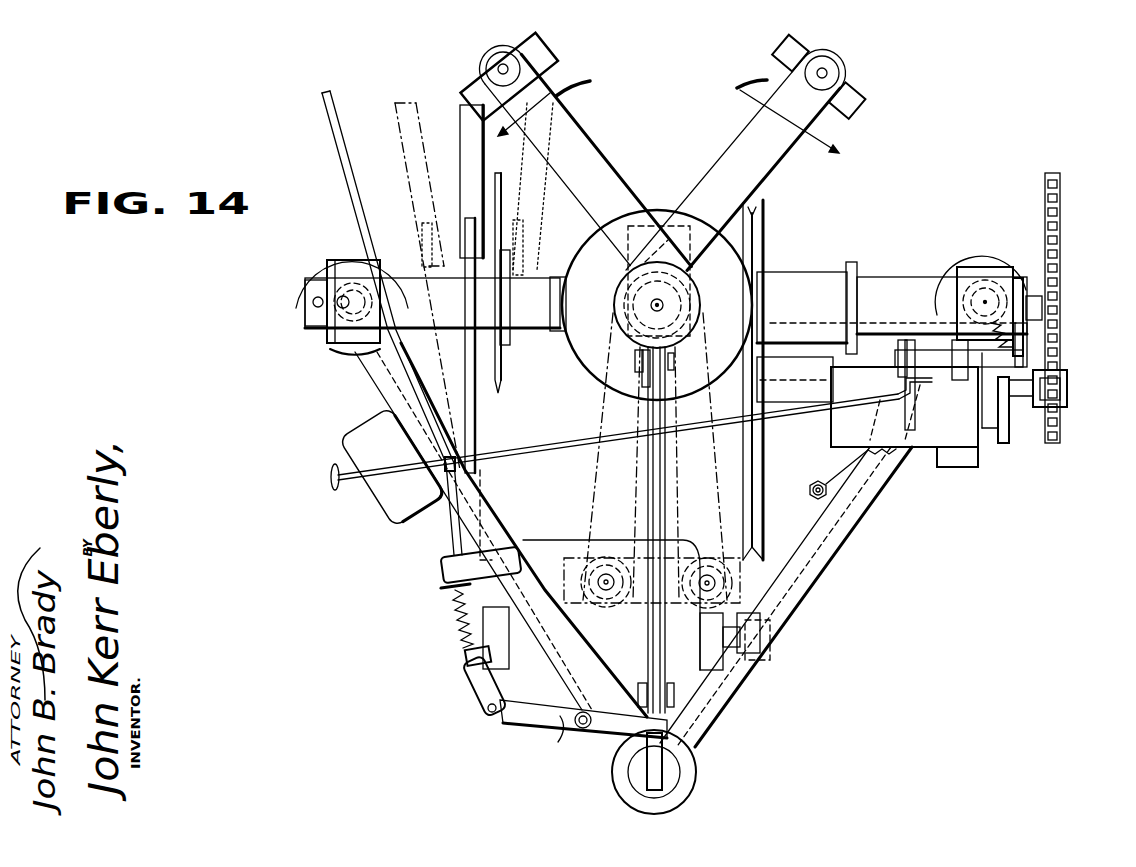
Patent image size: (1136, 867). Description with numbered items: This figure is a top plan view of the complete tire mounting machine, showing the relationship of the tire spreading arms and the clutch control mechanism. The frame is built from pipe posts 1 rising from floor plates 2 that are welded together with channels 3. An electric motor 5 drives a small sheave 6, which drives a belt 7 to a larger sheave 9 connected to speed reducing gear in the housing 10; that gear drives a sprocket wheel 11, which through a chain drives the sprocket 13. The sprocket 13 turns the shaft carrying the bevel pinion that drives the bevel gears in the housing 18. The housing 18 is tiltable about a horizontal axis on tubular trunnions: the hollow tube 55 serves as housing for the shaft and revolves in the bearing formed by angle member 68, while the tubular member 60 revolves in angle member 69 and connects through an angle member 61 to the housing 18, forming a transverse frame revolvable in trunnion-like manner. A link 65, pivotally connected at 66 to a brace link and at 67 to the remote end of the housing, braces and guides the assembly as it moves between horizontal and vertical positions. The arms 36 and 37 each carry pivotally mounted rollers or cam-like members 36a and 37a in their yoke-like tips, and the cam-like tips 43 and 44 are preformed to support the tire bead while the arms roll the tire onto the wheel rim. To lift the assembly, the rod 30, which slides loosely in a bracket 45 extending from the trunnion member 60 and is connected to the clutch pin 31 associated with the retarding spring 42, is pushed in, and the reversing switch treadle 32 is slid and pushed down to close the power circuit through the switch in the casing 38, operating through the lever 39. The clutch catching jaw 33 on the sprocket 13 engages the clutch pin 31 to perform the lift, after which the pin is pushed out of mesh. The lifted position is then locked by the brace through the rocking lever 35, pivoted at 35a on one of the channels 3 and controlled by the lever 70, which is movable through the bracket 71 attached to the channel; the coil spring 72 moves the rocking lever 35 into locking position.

The pipe posts 1 is at (350, 270).
The floor plates 2 is at (310, 258).
The channels 3 is at (370, 378).
The electric motor 5 is at (553, 548).
The small sheave 6 is at (760, 628).
The belt 7 is at (756, 577).
The sheave 9 is at (767, 233).
The housing 10 is at (963, 430).
The sprocket wheel 11 is at (1063, 408).
The sprocket 13 is at (1064, 220).
The housing 18 is at (596, 362).
The rod 30 is at (329, 480).
The clutch pin 31 is at (1003, 445).
The reversing switch treadle 32 is at (460, 120).
The clutch catching jaw 33 is at (1048, 268).
The rocking lever 35 is at (564, 691).
The pivot 35a is at (582, 728).
The arm 36 is at (750, 145).
The roller or cam-like member 36a is at (846, 63).
The arm 37 is at (575, 149).
The roller or cam-like member 37a is at (502, 50).
The casing 38 is at (392, 513).
The lever 39 is at (462, 452).
The retarding spring 42 is at (1024, 333).
The tip 43 is at (862, 105).
The tip 44 is at (472, 92).
The bracket 45 is at (452, 392).
The hollow tube 55 is at (880, 290).
The tubular member 60 is at (413, 273).
The angle member 61 is at (525, 270).
The link 65 is at (664, 497).
The pivot 66 is at (640, 682).
The pivot 67 is at (636, 373).
The angle member 68 is at (1022, 280).
The angle member 69 is at (327, 341).
The lever 70 is at (328, 116).
The bracket 71 is at (443, 571).
The coil spring 72 is at (455, 613).